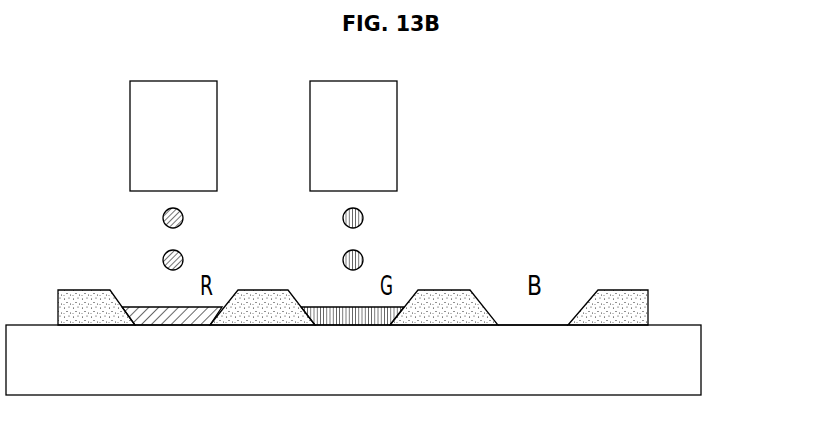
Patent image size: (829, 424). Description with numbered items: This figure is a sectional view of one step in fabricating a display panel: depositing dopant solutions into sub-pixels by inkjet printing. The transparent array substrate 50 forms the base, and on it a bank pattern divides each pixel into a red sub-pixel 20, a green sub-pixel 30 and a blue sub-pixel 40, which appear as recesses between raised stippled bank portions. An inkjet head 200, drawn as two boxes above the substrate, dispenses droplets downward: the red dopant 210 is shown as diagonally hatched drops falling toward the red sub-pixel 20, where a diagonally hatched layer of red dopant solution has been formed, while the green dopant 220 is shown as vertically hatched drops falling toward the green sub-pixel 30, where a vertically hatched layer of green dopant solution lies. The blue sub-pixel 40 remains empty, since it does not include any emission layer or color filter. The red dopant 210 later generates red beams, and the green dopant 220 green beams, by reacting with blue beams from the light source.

The inkjet head 200 is at (140, 128).
The red dopant 210 is at (162, 218).
The green dopant 220 is at (367, 218).
The red sub-pixel 20 is at (142, 305).
The green sub-pixel 30 is at (322, 305).
The blue sub-pixel 40 is at (565, 303).
The array substrate 50 is at (688, 356).